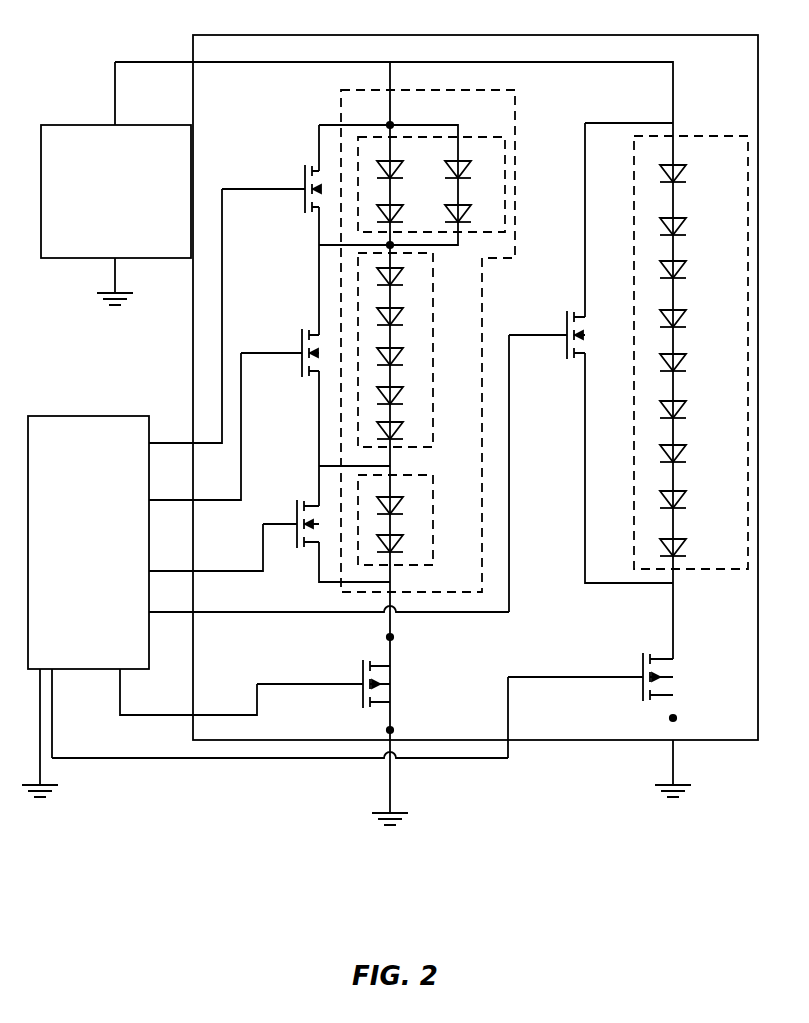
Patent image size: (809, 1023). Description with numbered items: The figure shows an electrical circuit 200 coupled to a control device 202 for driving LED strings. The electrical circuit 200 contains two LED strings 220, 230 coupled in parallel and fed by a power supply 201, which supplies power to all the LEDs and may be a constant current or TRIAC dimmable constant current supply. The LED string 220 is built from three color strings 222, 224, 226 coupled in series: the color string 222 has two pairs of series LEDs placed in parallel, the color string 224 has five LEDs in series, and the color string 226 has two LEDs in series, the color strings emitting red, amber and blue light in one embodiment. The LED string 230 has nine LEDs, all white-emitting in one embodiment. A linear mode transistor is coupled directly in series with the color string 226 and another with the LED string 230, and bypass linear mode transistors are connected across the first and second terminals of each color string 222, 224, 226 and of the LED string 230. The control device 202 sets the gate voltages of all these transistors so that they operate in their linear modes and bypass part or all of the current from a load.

The electrical circuit 200 is at (247, 50).
The power supply 201 is at (116, 183).
The control device 202 is at (85, 606).
The LED string 220 is at (428, 329).
The color string 222 is at (431, 170).
The color string 224 is at (416, 350).
The color string 226 is at (395, 510).
The LED string 230 is at (691, 342).